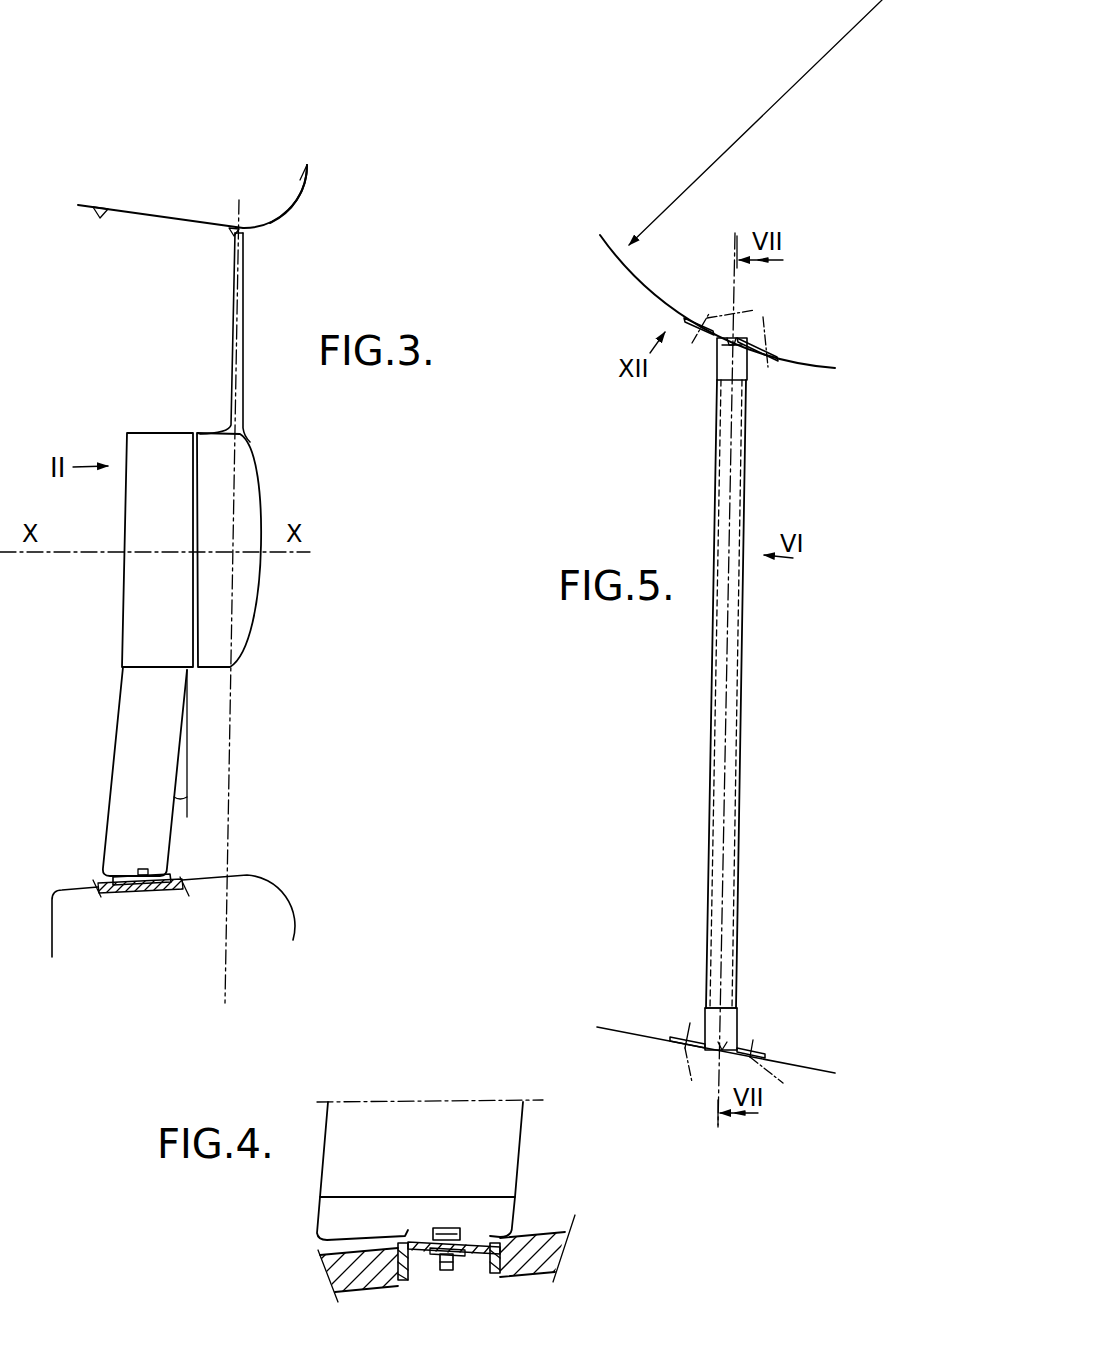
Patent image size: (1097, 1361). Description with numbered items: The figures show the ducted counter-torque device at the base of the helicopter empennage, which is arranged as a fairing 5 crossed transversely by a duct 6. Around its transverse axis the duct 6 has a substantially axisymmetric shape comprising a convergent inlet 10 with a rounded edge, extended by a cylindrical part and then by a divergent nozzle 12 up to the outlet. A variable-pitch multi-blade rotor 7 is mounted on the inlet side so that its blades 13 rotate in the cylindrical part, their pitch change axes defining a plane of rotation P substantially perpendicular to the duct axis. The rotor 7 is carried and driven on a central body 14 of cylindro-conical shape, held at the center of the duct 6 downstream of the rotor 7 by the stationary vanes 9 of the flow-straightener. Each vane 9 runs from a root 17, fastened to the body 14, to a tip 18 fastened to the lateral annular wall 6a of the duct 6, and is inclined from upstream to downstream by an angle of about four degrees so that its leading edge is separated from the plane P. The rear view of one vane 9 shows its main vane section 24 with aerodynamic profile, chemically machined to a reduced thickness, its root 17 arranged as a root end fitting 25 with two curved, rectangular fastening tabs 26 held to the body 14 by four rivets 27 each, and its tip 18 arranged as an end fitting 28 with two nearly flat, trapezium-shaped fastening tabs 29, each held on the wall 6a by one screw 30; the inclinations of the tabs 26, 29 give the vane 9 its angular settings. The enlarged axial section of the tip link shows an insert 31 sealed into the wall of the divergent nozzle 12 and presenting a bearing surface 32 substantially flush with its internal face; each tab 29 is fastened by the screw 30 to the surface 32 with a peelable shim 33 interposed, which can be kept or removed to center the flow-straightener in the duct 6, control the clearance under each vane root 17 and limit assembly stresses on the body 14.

In FIG. 3, the fairing 5 is at (265, 190).
In FIG. 3, the duct 6 is at (175, 285).
In FIG. 5, the lateral and annular wall of the duct 6a is at (628, 1047).
In FIG. 3, the variable-pitch multi-blade rotor 7 is at (262, 441).
In FIG. 3, the stationary vane 9 is at (125, 722).
In FIG. 4, the stationary vane 9 is at (510, 1127).
In FIG. 5, the stationary vane 9 is at (745, 682).
In FIG. 3, the convergent inlet 10 is at (297, 213).
In FIG. 3, the divergent nozzle 12 is at (93, 205).
In FIG. 4, the divergent nozzle 12 is at (543, 1253).
In FIG. 3, the blade 13 is at (238, 293).
In FIG. 3, the central body 14 is at (127, 620).
In FIG. 5, the central body 14 is at (647, 282).
In FIG. 5, the root 17 is at (714, 364).
In FIG. 5, the tip 18 is at (744, 1038).
In FIG. 5, the main vane section 24 is at (720, 708).
In FIG. 5, the root end fitting 25 is at (738, 363).
In FIG. 5, the fastening tab 26 is at (777, 355).
In FIG. 5, the rivet 27 is at (738, 326).
In FIG. 5, the foot 28 is at (715, 1022).
In FIG. 4, the fastening tab 29 is at (477, 1240).
In FIG. 5, the fastening tab 29 is at (765, 1057).
In FIG. 4, the screw 30 is at (445, 1227).
In FIG. 5, the screw 30 is at (741, 1067).
In FIG. 4, the insert 31 is at (497, 1273).
In FIG. 4, the bearing surface 32 is at (468, 1255).
In FIG. 4, the peelable shim 33 is at (420, 1248).
In FIG. 3, the plane of rotation P is at (232, 723).